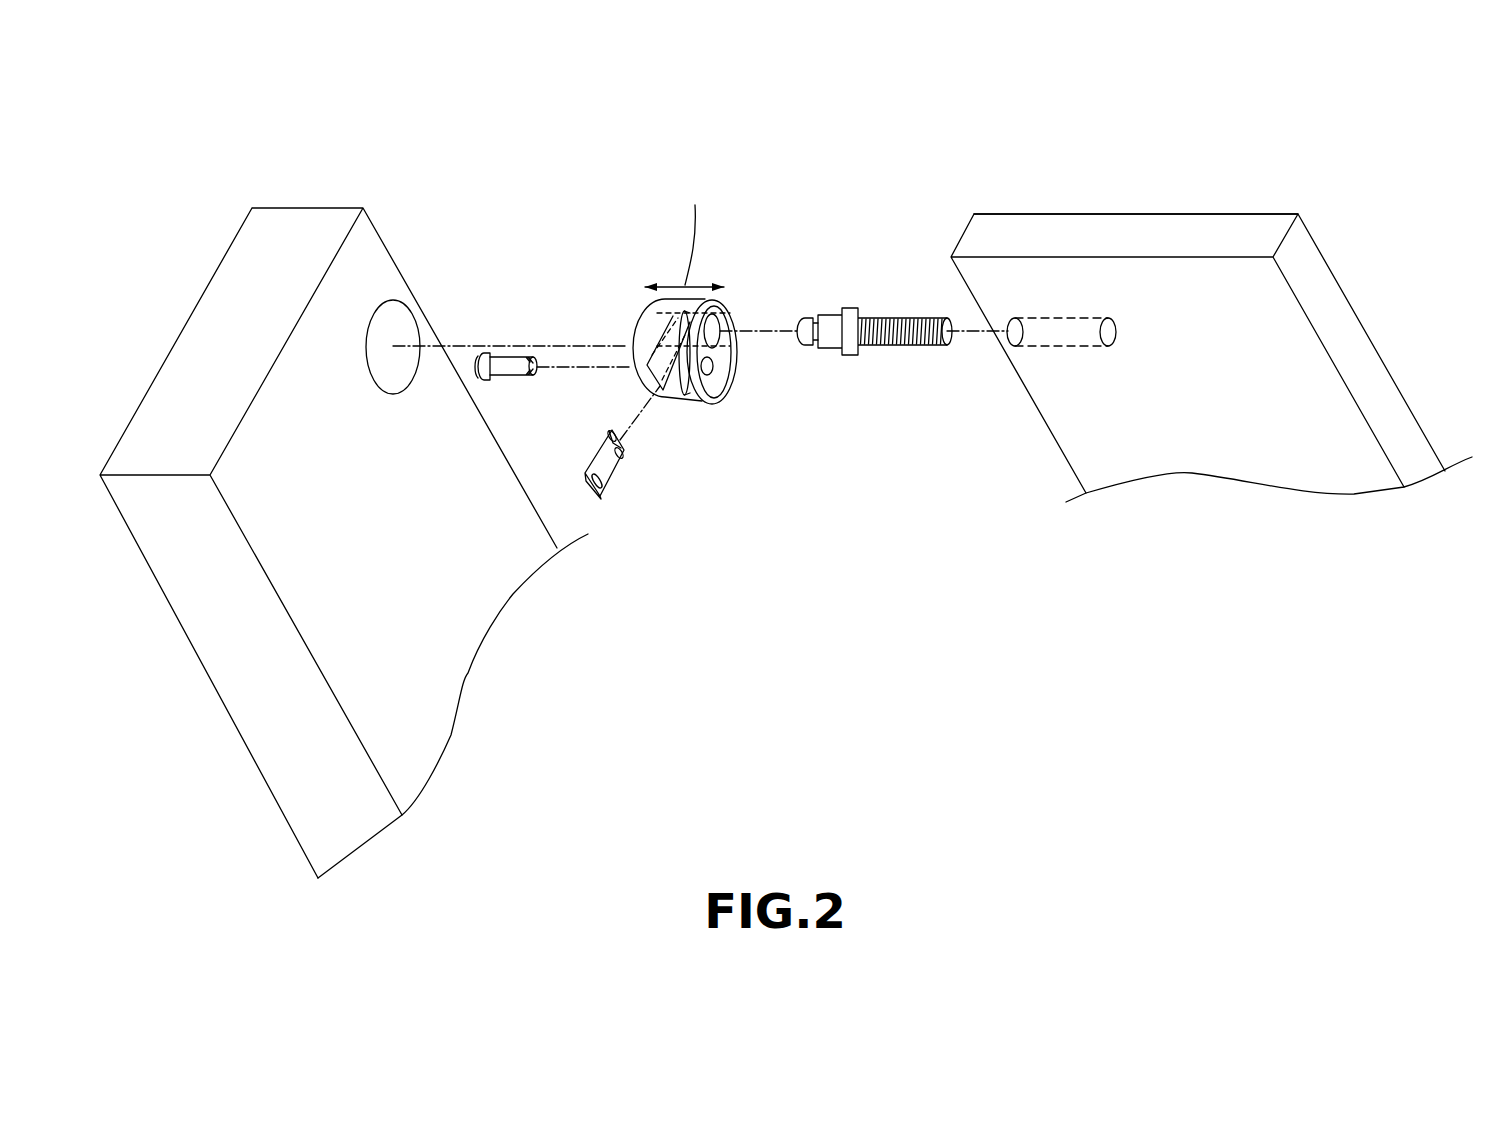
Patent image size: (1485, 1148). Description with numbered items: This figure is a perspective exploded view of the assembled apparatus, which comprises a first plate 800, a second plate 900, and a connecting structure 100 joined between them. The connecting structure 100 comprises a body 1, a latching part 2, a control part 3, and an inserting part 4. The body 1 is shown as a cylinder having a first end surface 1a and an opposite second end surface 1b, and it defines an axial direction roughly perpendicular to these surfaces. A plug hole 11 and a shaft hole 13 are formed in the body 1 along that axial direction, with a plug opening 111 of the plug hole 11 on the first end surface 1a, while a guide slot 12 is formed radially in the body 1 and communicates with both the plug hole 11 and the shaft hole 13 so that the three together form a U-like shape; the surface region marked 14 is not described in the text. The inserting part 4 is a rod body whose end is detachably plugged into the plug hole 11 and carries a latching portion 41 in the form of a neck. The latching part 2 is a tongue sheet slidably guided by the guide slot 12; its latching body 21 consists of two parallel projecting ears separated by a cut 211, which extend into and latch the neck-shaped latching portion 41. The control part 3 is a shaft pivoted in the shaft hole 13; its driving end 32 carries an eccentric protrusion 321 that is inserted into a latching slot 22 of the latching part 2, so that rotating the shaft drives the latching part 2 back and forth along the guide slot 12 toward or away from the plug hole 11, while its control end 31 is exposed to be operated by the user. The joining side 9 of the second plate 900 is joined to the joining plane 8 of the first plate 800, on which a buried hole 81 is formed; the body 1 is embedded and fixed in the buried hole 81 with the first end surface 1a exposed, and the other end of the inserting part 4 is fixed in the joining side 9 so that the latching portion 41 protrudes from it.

The first plate 800 is at (196, 291).
The joining plane 8 is at (288, 517).
The buried hole 81 is at (393, 302).
The control part 3 is at (499, 444).
The driving end 32 is at (478, 366).
The control end 31 is at (533, 378).
The protrusion 321 is at (480, 366).
The body 1 is at (693, 297).
The first end surface 1a is at (730, 362).
The second end surface 1b is at (632, 337).
The plug hole 11 is at (724, 311).
The plug opening 111 is at (718, 332).
The guide slot 12 is at (648, 318).
The shaft hole 13 is at (707, 371).
The rim 14 is at (735, 352).
The latching part 2 is at (624, 493).
The latching body 21 is at (625, 458).
The cut 211 is at (610, 442).
The latching slot 22 is at (591, 497).
The connecting structure 100 is at (760, 504).
The inserting part 4 is at (874, 309).
The latching portion 41 is at (812, 350).
The joining side 9 is at (955, 238).
The second plate 900 is at (1190, 207).